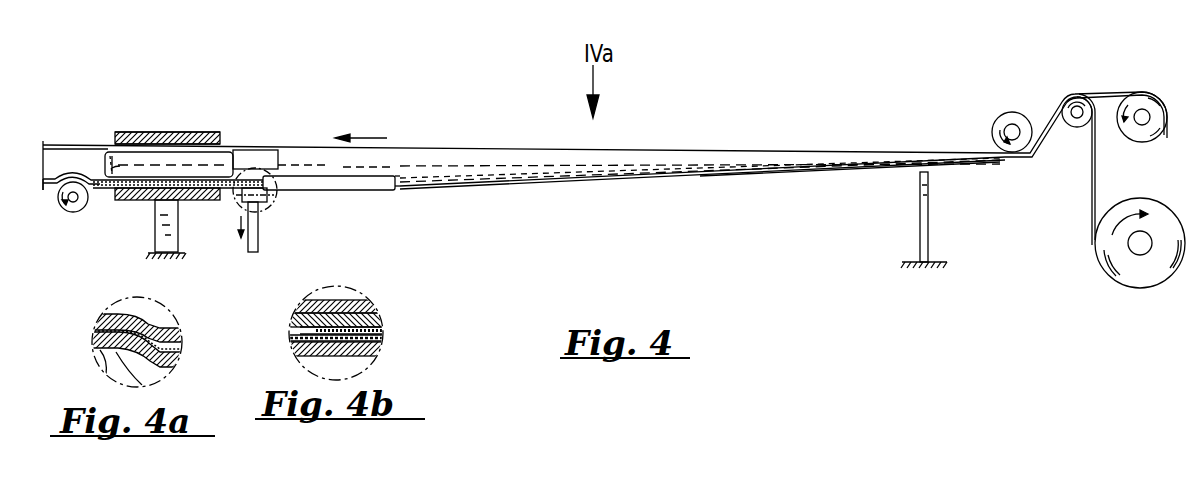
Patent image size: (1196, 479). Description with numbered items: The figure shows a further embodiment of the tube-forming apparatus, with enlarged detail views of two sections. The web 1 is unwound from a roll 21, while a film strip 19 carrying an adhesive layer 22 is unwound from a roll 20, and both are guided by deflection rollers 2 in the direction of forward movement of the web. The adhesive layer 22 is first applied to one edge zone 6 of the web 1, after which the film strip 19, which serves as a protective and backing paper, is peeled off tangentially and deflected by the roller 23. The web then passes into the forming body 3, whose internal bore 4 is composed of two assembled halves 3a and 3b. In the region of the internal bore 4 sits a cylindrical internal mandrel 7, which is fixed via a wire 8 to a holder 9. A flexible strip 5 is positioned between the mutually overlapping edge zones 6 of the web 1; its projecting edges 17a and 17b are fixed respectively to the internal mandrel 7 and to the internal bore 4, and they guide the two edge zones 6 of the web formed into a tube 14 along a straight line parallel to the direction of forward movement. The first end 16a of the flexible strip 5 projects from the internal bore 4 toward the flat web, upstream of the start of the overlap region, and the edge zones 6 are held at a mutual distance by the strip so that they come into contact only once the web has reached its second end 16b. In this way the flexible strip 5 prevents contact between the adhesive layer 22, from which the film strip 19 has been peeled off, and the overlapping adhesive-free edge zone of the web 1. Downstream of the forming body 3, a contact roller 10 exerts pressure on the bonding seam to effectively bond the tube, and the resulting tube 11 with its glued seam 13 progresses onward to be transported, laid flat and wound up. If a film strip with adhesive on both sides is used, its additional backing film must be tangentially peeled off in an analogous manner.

In FIG. 4, the web 1 is at (1113, 92).
In FIG. 4, the deflection rollers 2 is at (1020, 118).
In FIG. 4, the forming body 3 is at (212, 131).
In FIG. 4, the first half of the forming body 3a is at (185, 132).
In FIG. 4, the second half of the forming body 3b is at (192, 200).
In FIG. 4, the internal bore 4 is at (154, 132).
In FIG. 4, the flexible strip 5 is at (354, 192).
In FIG. 4b, the flexible strip 5 is at (380, 322).
In FIG. 4, the edge zones 6 is at (953, 166).
In FIG. 4a, the edge zones 6 is at (170, 333).
In FIG. 4b, the edge zones 6 is at (355, 306).
In FIG. 4, the internal mandrel 7 is at (222, 158).
In FIG. 4, the wire 8 is at (261, 160).
In FIG. 4, the holder 9 is at (921, 228).
In FIG. 4, the contact roller 10 is at (73, 212).
In FIG. 4a, the contact roller 10 is at (116, 368).
In FIG. 4, the tube 11 is at (58, 157).
In FIG. 4, the glued seam 13 is at (44, 190).
In FIG. 4, the tube 14 is at (303, 150).
In FIG. 4, the first end of the flexible strip 16a is at (397, 178).
In FIG. 4, the second end of the flexible strip 16b is at (118, 163).
In FIG. 4, the projecting edge of the flexible strip 17a is at (377, 167).
In FIG. 4, the projecting edge of the flexible strip 17b is at (382, 192).
In FIG. 4, the film strip 19 is at (250, 243).
In FIG. 4b, the film strip 19 is at (381, 330).
In FIG. 4, the roll 20 is at (1125, 285).
In FIG. 4, the roll 21 is at (1160, 125).
In FIG. 4, the adhesive layer 22 is at (1090, 191).
In FIG. 4a, the adhesive layer 22 is at (176, 350).
In FIG. 4b, the adhesive layer 22 is at (302, 334).
In FIG. 4, the roller 23 is at (278, 196).